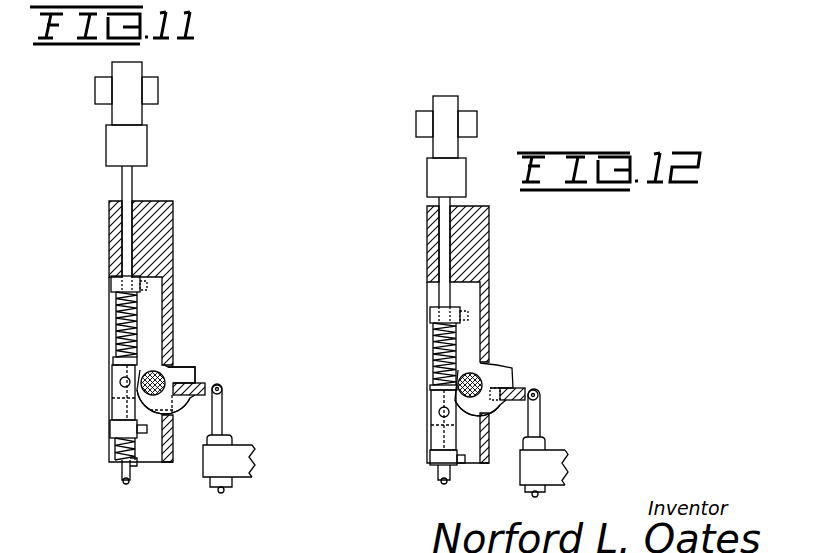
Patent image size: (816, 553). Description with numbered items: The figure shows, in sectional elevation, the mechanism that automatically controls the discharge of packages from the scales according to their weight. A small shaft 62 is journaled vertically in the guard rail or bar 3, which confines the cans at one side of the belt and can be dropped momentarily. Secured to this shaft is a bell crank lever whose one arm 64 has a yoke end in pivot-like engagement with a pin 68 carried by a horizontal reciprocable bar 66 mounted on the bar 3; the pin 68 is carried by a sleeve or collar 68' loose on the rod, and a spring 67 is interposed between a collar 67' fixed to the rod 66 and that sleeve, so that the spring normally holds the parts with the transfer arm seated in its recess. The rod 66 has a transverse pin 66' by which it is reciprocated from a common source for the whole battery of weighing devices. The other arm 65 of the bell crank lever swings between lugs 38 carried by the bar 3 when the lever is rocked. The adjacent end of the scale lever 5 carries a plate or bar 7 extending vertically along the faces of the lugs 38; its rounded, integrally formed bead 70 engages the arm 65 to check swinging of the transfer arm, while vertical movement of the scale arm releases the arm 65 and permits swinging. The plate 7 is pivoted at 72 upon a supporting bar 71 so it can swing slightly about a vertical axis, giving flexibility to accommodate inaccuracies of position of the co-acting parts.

In FIG. 11, the bar 3 is at (173, 243).
In FIG. 12, the bar 3 is at (480, 235).
In FIG. 11, the scale lever 5 is at (247, 470).
In FIG. 12, the scale lever 5 is at (556, 476).
In FIG. 11, the bar or plate 7 is at (188, 405).
In FIG. 12, the bar or plate 7 is at (527, 386).
In FIG. 11, the lugs 38 is at (188, 366).
In FIG. 12, the lugs 38 is at (496, 368).
In FIG. 11, the shaft 62 is at (168, 366).
In FIG. 12, the shaft 62 is at (489, 362).
In FIG. 11, the arm 64 is at (112, 372).
In FIG. 12, the arm 64 is at (462, 405).
In FIG. 11, the bell crank lever arm 65 is at (193, 402).
In FIG. 12, the bell crank lever arm 65 is at (512, 378).
In FIG. 11, the reciprocable bar 66 is at (99, 221).
In FIG. 12, the reciprocable bar 66 is at (414, 252).
In FIG. 11, the transverse pin 66' is at (147, 114).
In FIG. 12, the transverse pin 66' is at (419, 146).
In FIG. 11, the spring 67 is at (98, 381).
In FIG. 12, the spring 67 is at (418, 354).
In FIG. 11, the collars 67' is at (107, 283).
In FIG. 12, the collars 67' is at (421, 318).
In FIG. 11, the pin 68 is at (94, 393).
In FIG. 12, the pin 68 is at (419, 421).
In FIG. 11, the sleeve or collar 68' is at (91, 446).
In FIG. 12, the sleeve or collar 68' is at (422, 462).
In FIG. 11, the bead 70 is at (192, 370).
In FIG. 11, the supporting bar 71 is at (222, 400).
In FIG. 12, the supporting bar 71 is at (541, 418).
In FIG. 11, the pivot 72 is at (222, 388).
In FIG. 12, the pivot 72 is at (540, 395).